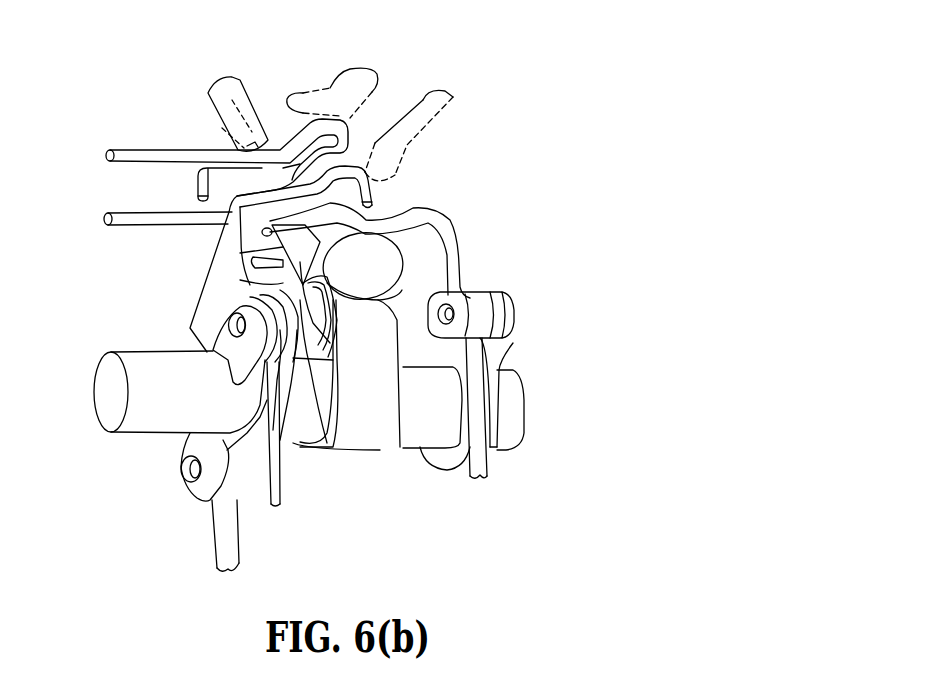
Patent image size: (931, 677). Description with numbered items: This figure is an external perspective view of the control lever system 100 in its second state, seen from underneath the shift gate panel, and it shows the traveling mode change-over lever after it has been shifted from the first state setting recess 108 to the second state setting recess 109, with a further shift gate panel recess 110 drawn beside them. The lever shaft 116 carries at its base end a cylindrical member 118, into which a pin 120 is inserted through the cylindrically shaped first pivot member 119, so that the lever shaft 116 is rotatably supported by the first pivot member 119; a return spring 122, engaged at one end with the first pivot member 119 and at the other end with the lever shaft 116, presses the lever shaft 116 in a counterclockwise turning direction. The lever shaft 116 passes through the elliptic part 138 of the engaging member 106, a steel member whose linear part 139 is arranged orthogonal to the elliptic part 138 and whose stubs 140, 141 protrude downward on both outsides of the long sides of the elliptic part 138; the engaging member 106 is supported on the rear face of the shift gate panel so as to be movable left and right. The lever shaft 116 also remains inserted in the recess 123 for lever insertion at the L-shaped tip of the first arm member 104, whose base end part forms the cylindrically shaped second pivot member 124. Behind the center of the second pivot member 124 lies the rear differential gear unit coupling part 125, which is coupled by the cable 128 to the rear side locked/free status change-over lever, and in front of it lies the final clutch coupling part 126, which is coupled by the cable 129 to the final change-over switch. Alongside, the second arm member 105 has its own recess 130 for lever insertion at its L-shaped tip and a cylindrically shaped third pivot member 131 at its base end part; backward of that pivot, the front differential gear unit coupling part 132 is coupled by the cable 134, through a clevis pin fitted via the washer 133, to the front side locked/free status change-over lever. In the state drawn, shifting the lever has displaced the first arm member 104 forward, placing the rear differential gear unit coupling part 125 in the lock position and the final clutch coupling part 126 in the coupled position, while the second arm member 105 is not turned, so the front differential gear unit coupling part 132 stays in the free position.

The pickup head assembly 100 is at (534, 136).
The first arm member 104 is at (201, 287).
The second arm member 105 is at (453, 233).
The engaging member 106 is at (198, 150).
The first state setting recess 108 is at (297, 92).
The second state setting recess 109 is at (203, 100).
The cylinder 110 is at (433, 97).
The lever shaft 116 is at (243, 78).
The cylindrical member 118 is at (327, 433).
The first pivot member 119 is at (423, 430).
The pin 120 is at (392, 257).
The return spring 122 is at (308, 343).
The recess for lever insertion 123 is at (250, 257).
The second pivot member 124 is at (148, 420).
The rear differential gear unit coupling part 125 is at (180, 472).
The final clutch coupling part 126 is at (228, 318).
The cable 128 is at (230, 533).
The cable 129 is at (280, 490).
The recess for lever insertion 130 is at (377, 223).
The third pivot member 131 is at (510, 428).
The front differential gear unit coupling part 132 is at (440, 284).
The washer 133 is at (462, 334).
The cable 134 is at (488, 458).
The elliptic part 138 is at (368, 128).
The linear part 139 is at (113, 227).
The stub 140 is at (380, 182).
The stub 141 is at (197, 180).